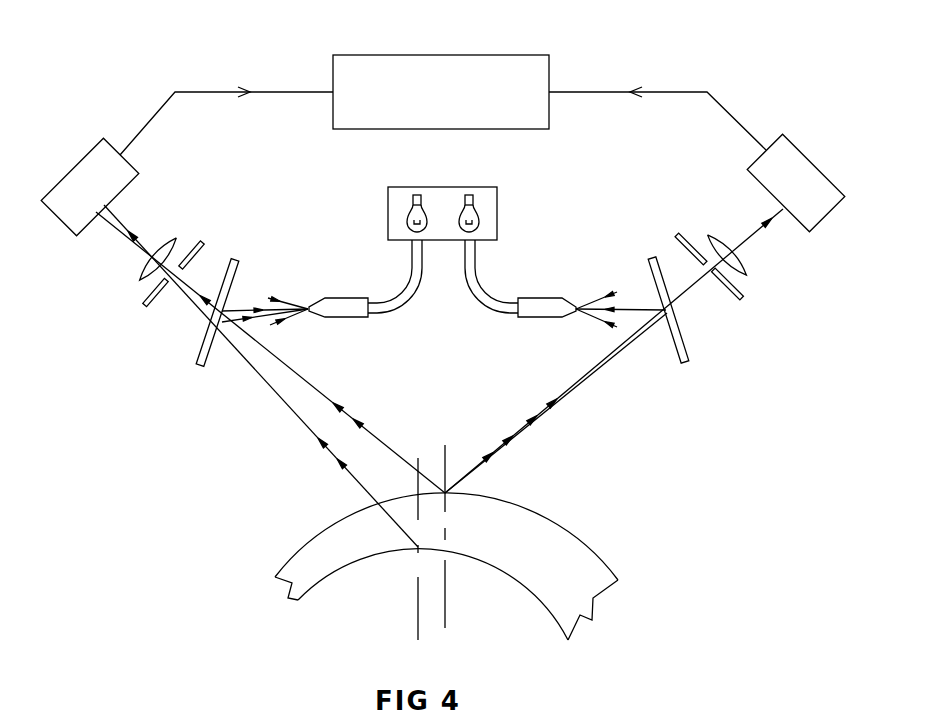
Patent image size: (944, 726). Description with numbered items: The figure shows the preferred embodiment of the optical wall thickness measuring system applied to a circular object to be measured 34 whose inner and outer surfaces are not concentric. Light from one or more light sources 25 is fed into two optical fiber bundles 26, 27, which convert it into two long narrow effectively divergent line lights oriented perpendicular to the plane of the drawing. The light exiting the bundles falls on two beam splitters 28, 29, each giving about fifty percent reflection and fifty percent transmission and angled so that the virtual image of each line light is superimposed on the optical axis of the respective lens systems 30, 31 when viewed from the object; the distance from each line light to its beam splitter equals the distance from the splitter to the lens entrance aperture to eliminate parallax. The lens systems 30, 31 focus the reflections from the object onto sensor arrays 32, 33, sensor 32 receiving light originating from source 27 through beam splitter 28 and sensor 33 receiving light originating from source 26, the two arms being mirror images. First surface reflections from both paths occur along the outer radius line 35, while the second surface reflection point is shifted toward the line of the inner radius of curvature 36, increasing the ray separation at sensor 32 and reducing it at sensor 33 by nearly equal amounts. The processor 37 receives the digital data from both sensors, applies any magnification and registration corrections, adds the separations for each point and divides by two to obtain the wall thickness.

The light sources 25 is at (462, 194).
The optical fiber bundle 26 is at (322, 282).
The optical fiber bundle 27 is at (565, 283).
The beam splitter 28 is at (203, 315).
The beam splitter 29 is at (676, 321).
The lens system 30 is at (159, 270).
The lens system 31 is at (725, 267).
The sensor array 32 is at (90, 187).
The sensor array 33 is at (796, 183).
The object to be measured 34 is at (592, 547).
The outer radius line 35 is at (489, 536).
The line of the inner radius of curvature 36 is at (418, 556).
The processor 37 is at (476, 55).